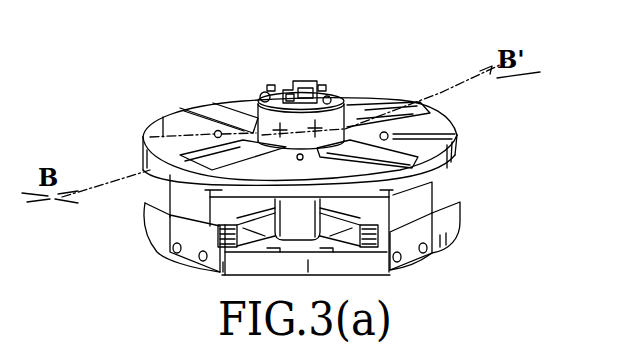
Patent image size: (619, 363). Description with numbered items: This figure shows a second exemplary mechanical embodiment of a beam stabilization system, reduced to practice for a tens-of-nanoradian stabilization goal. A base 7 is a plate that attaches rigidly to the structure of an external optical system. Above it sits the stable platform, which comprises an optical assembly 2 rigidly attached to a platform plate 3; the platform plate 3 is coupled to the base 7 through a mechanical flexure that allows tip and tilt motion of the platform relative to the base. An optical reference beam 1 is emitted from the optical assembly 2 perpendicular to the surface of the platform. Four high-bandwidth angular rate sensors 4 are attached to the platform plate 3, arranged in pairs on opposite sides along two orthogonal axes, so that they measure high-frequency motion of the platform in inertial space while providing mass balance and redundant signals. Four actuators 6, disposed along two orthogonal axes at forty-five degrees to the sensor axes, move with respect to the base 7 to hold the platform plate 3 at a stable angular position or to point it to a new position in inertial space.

The optical reference beam 1 is at (300, 80).
The optical assembly 2 is at (263, 86).
The platform plate 3 is at (163, 113).
The angular rate sensors 4 is at (148, 206).
The actuators 6 is at (282, 236).
The base 7 is at (357, 266).